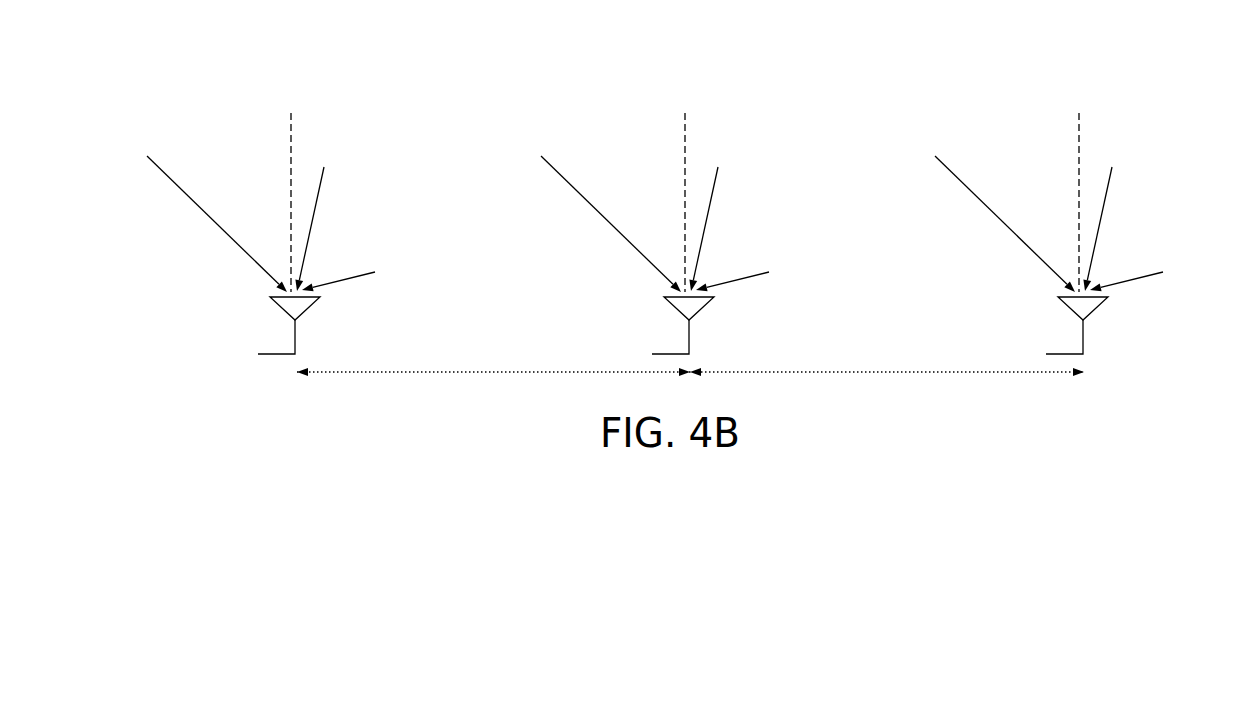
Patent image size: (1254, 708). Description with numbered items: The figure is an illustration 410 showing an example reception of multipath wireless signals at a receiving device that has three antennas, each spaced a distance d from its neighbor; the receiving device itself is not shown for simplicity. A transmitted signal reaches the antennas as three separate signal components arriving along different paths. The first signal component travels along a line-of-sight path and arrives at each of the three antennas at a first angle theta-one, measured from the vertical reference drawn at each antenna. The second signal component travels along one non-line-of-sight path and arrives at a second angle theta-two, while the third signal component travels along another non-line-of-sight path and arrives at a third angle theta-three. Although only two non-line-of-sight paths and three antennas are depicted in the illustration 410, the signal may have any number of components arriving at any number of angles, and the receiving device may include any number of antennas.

The illustration 410 is at (966, 38).